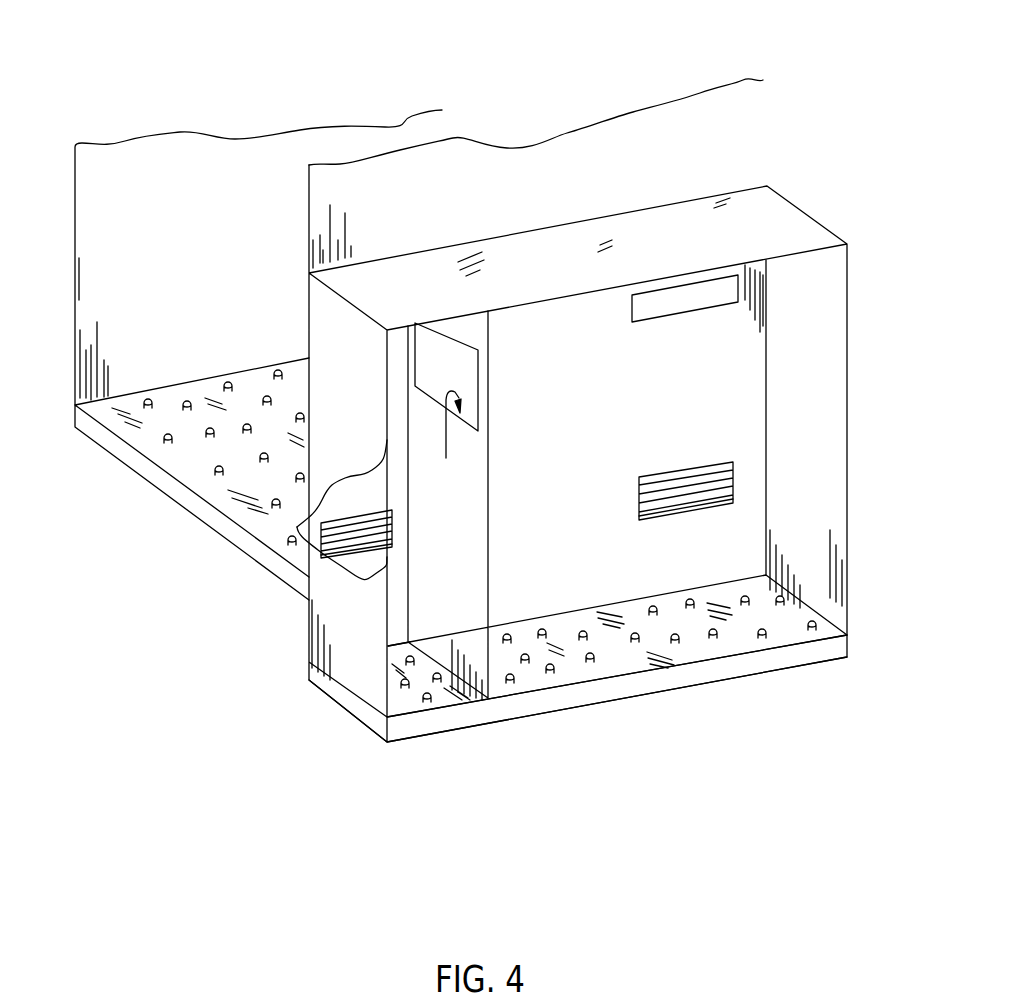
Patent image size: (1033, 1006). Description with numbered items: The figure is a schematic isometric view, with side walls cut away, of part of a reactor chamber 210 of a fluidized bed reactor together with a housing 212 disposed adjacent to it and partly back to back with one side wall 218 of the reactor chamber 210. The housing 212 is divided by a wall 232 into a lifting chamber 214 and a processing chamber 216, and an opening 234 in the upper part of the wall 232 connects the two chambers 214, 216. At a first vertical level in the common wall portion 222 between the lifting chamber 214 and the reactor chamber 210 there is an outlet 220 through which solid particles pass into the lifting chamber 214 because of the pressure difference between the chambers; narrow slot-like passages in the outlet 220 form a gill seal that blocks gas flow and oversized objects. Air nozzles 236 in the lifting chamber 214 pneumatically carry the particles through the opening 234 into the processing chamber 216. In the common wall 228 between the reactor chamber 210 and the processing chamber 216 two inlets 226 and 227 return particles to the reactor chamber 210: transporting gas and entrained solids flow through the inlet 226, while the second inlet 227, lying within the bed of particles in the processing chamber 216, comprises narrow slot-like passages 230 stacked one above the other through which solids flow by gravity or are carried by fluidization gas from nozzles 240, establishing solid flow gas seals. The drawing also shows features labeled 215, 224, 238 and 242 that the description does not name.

The reactor chamber 210 is at (193, 183).
The housing 212 is at (760, 150).
The lifting chamber 214 is at (296, 640).
The floor panel with projections 215 is at (230, 528).
The processing chamber 216 is at (860, 588).
The side wall 218 is at (460, 176).
The outlet 220 is at (390, 511).
The common wall portion 222 is at (318, 517).
The louver 224 is at (390, 540).
The inlet 226 is at (673, 303).
The second inlet 227 is at (641, 498).
The common wall 228 is at (745, 413).
The narrow slot like passages 230 is at (652, 512).
The wall 232 is at (468, 492).
The opening 234 is at (463, 372).
The air nozzles 236 is at (420, 698).
The base 238 is at (437, 718).
The nozzles 240 is at (715, 636).
The floor edge 242 is at (817, 650).